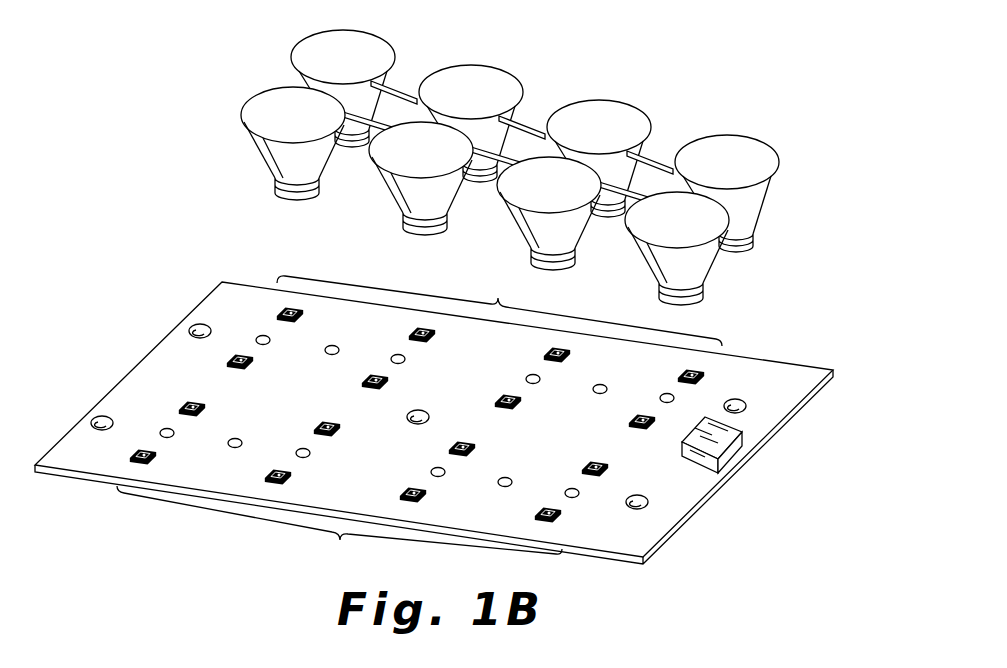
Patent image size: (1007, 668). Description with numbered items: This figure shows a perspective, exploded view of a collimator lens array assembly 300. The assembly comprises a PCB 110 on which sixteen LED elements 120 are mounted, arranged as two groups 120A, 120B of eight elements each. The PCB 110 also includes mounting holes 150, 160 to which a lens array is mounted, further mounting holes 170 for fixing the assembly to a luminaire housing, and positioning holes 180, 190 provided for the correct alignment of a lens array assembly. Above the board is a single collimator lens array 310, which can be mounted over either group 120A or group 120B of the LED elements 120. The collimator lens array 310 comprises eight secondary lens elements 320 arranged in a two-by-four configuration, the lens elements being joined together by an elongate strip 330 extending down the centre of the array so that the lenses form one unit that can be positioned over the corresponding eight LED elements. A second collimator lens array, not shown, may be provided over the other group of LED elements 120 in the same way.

The PCB 110 is at (770, 392).
The LED elements 120 is at (213, 356).
The first group of LED elements 120A is at (339, 529).
The second group of LED elements 120B is at (499, 309).
The mounting holes 150 is at (317, 366).
The mounting holes 160 is at (585, 406).
The mounting holes 170 is at (190, 329).
The positioning holes 180 is at (258, 336).
The positioning holes 190 is at (675, 398).
The collimator lens array assembly 300 is at (772, 284).
The collimator lens array 310 is at (233, 197).
The secondary lens elements 320 is at (730, 160).
The connecting web 330 is at (635, 177).